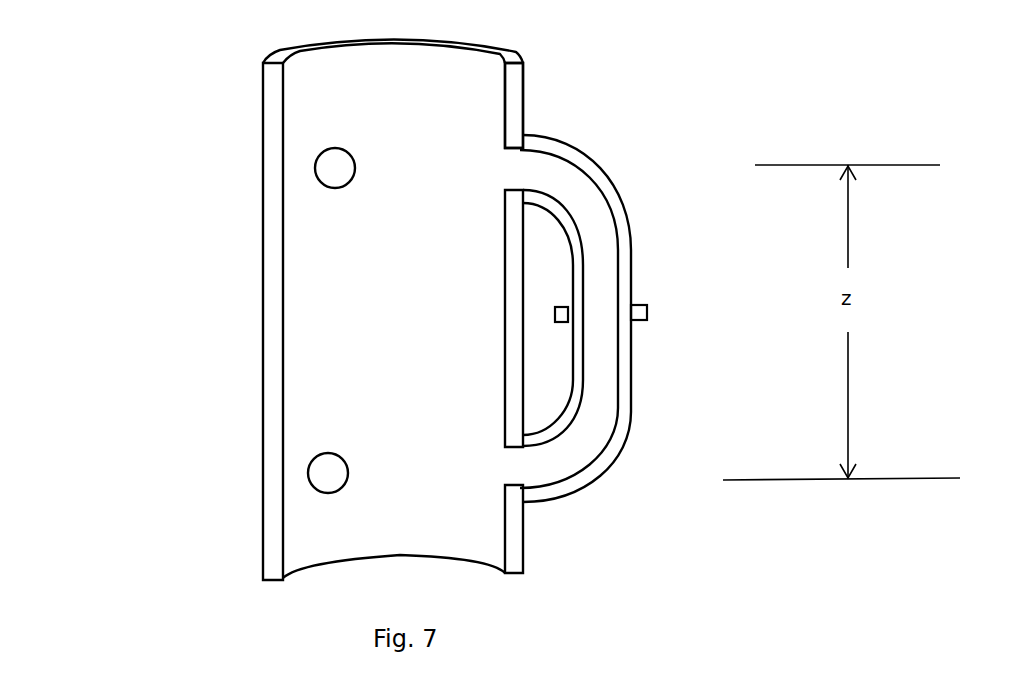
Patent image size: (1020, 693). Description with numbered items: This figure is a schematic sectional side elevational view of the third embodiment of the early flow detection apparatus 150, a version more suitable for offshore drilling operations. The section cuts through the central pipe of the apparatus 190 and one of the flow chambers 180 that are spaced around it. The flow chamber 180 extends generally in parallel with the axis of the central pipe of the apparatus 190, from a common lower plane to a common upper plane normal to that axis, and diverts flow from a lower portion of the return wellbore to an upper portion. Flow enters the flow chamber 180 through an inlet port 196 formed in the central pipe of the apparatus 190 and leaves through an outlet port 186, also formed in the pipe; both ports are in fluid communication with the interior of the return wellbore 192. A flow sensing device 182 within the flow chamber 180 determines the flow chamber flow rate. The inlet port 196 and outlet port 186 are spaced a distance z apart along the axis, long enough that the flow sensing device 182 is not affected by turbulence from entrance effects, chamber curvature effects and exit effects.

The early flow detection apparatus 150 is at (183, 80).
The flow chamber 180 is at (615, 215).
The flow sensing device 182 is at (647, 320).
The outlet port 186 is at (503, 170).
The central pipe of the apparatus 190 is at (518, 92).
The interior of the return wellbore 192 is at (328, 313).
The inlet port 196 is at (502, 465).